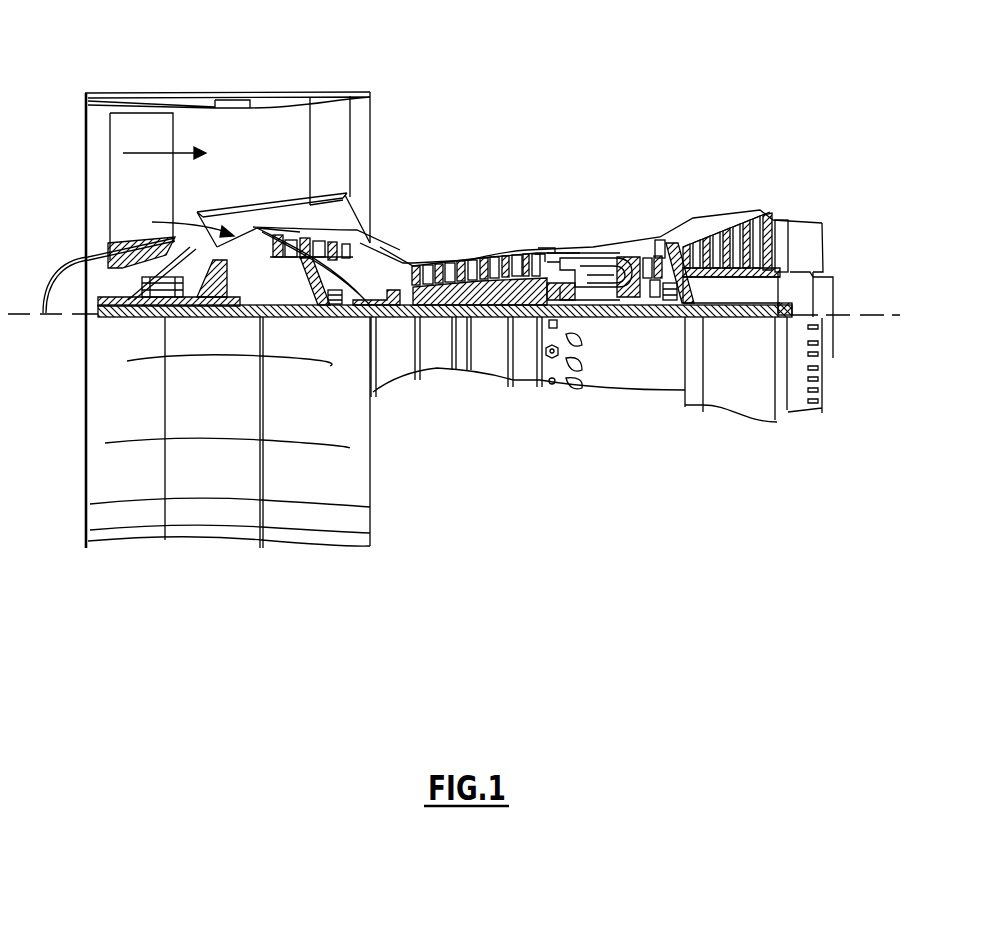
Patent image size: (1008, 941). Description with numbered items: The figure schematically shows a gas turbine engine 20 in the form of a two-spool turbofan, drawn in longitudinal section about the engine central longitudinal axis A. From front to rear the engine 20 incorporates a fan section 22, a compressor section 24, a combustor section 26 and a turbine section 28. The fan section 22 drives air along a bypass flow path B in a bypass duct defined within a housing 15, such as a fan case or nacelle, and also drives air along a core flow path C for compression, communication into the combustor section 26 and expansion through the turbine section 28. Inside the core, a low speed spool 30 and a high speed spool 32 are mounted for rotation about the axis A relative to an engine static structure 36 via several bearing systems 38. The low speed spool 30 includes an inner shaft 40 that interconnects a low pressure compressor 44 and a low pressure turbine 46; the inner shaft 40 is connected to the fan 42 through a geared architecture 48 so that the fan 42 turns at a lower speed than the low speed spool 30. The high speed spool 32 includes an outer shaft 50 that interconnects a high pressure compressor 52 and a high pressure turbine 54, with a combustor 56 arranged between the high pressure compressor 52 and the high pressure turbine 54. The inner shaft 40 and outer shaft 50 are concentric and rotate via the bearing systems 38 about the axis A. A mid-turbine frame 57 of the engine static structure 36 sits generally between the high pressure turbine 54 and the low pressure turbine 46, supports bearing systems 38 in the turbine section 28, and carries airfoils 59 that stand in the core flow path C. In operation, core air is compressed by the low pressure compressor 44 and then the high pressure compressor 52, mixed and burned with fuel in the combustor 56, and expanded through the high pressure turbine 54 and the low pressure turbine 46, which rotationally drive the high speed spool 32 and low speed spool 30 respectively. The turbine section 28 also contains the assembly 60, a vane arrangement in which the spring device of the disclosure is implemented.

The housing 15 is at (228, 108).
The gas turbine engine 20 is at (592, 129).
The fan section 22 is at (170, 82).
The compressor section 24 is at (409, 236).
The combustor section 26 is at (582, 226).
The turbine section 28 is at (716, 188).
The low speed spool 30 is at (493, 327).
The high speed spool 32 is at (530, 262).
The engine static structure 36 is at (527, 395).
The bearing systems 38 is at (342, 318).
The inner shaft 40 is at (387, 320).
The fan 42 is at (155, 195).
The low pressure compressor 44 is at (310, 235).
The low pressure turbine 46 is at (736, 218).
The geared architecture 48 is at (235, 314).
The outer shaft 50 is at (590, 318).
The high pressure compressor 52 is at (478, 260).
The high pressure turbine 54 is at (632, 247).
The combustor 56 is at (592, 260).
The mid-turbine frame 57 is at (671, 238).
The airfoils 59 is at (680, 268).
The assembly 60 is at (683, 243).
The engine central longitudinal axis A is at (897, 314).
The bypass flow path B is at (149, 152).
The core flow path C is at (183, 222).